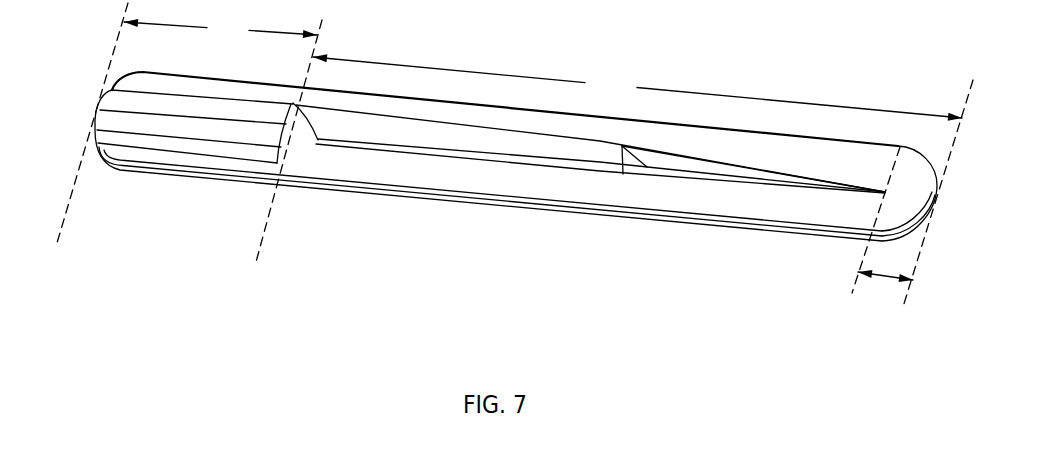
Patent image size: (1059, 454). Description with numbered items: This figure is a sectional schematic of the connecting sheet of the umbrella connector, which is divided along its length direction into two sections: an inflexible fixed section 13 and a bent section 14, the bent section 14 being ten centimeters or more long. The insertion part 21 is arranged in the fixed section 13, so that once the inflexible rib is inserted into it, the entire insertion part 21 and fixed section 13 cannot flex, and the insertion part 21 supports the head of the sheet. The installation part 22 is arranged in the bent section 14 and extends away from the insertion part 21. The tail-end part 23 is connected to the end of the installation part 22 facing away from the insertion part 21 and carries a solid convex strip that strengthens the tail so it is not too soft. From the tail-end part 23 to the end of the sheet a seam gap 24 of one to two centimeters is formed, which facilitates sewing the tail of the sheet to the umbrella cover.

The fixed section 13 is at (187, 123).
The bent section 14 is at (609, 141).
The insertion part 21 is at (200, 128).
The installation part 22 is at (407, 136).
The tail-end part 23 is at (725, 167).
The seam gap 24 is at (887, 278).